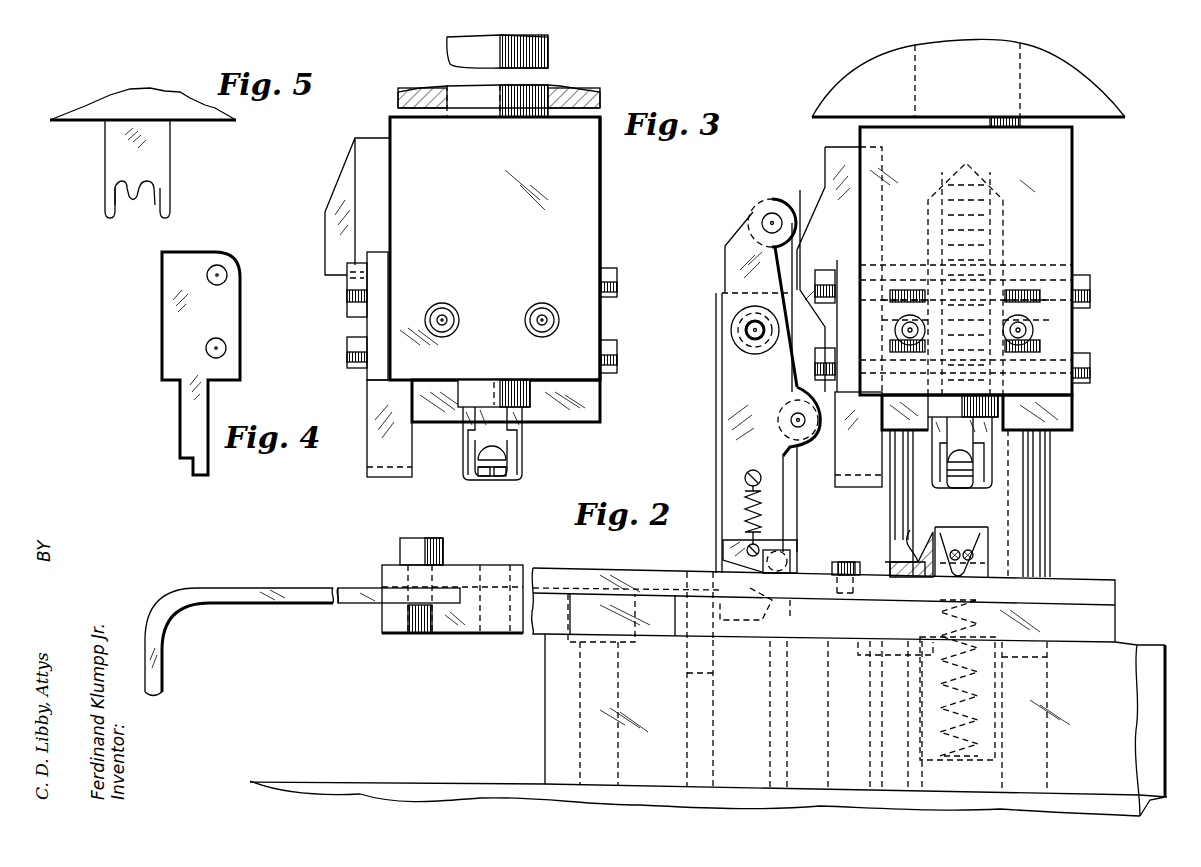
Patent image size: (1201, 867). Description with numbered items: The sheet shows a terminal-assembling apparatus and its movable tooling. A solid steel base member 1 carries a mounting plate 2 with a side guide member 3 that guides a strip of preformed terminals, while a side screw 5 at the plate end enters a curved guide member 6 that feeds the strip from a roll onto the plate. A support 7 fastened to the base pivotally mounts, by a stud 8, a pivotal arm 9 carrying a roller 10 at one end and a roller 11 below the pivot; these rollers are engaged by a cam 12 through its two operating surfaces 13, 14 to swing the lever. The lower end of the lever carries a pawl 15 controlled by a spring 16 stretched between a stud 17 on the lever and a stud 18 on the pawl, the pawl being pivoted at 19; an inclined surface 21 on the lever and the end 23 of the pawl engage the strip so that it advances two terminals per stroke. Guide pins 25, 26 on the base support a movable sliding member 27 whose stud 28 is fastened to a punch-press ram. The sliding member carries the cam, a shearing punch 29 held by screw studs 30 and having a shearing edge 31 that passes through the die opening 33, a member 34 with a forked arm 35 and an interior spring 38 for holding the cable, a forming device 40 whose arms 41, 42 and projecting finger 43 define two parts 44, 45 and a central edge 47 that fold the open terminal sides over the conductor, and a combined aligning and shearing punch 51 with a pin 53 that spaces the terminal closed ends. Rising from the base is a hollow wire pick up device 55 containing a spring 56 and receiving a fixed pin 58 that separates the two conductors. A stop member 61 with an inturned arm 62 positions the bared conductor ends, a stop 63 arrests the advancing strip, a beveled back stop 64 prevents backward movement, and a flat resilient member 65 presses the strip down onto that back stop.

In FIG. 2, the base member 1 is at (533, 694).
In FIG. 2, the mounting plate 2 is at (480, 633).
In FIG. 2, the side guide member 3 is at (475, 575).
In FIG. 2, the side screw 5 is at (445, 565).
In FIG. 2, the guide member 6 is at (310, 602).
In FIG. 2, the support 7 is at (716, 312).
In FIG. 2, the stud 8 is at (730, 336).
In FIG. 2, the pivotal arm 9 is at (724, 260).
In FIG. 2, the roller 10 is at (748, 198).
In FIG. 2, the roller 11 is at (812, 440).
In FIG. 3, the cam 12 is at (492, 248).
In FIG. 2, the cam 12 is at (823, 210).
In FIG. 3, the operating surface 13 is at (345, 190).
In FIG. 2, the operating surface 13 is at (824, 195).
In FIG. 3, the operating surface 14 is at (345, 288).
In FIG. 2, the operating surface 14 is at (815, 330).
In FIG. 2, the pawl 15 is at (723, 553).
In FIG. 2, the spring 16 is at (762, 510).
In FIG. 2, the stud 17 is at (745, 478).
In FIG. 2, the stud 18 is at (790, 538).
In FIG. 2, the pivot 19 is at (800, 557).
In FIG. 2, the inclined surface 21 is at (746, 620).
In FIG. 2, the end of pawl 23 is at (755, 605).
In FIG. 2, the guide pin 25 is at (910, 520).
In FIG. 3, the guide pin 26 is at (492, 465).
In FIG. 2, the guide pin 26 is at (968, 478).
In FIG. 5, the movable sliding member 27 is at (91, 135).
In FIG. 3, the movable sliding member 27 is at (593, 268).
In FIG. 2, the movable sliding member 27 is at (1073, 237).
In FIG. 3, the stud 28 is at (538, 117).
In FIG. 2, the stud 28 is at (962, 120).
In FIG. 4, the shearing punch 29 is at (239, 348).
In FIG. 3, the shearing punch 29 is at (376, 437).
In FIG. 2, the shearing punch 29 is at (862, 480).
In FIG. 3, the screw stud 30 is at (345, 340).
In FIG. 2, the screw stud 30 is at (815, 275).
In FIG. 4, the shearing edge 31 is at (205, 478).
In FIG. 3, the shearing edge 31 is at (400, 480).
In FIG. 2, the shearing edge 31 is at (850, 445).
In FIG. 2, the die opening 33 is at (441, 522).
In FIG. 3, the member 34 is at (498, 387).
In FIG. 2, the member 34 is at (1008, 418).
In FIG. 3, the forked arm 35 is at (478, 468).
In FIG. 2, the forked arm 35 is at (975, 466).
In FIG. 3, the spring 38 is at (608, 320).
In FIG. 2, the spring 38 is at (1060, 326).
In FIG. 5, the forming device 40 is at (99, 180).
In FIG. 3, the forming device 40 is at (532, 449).
In FIG. 2, the forming device 40 is at (1002, 454).
In FIG. 5, the arm 41 is at (110, 204).
In FIG. 3, the arm 41 is at (475, 452).
In FIG. 2, the arm 41 is at (960, 465).
In FIG. 5, the arm 42 is at (165, 203).
In FIG. 3, the arm 42 is at (510, 478).
In FIG. 5, the projecting finger 43 is at (127, 222).
In FIG. 5, the part 44 is at (142, 193).
In FIG. 5, the part 45 is at (150, 190).
In FIG. 5, the edge 47 is at (125, 183).
In FIG. 3, the combined aligning and shearing punch 51 is at (484, 472).
In FIG. 3, the pin 53 is at (500, 472).
In FIG. 2, the pin 53 is at (995, 460).
In FIG. 2, the wire pick up device 55 is at (998, 569).
In FIG. 2, the spring 56 is at (935, 695).
In FIG. 2, the fixed pin 58 is at (975, 540).
In FIG. 2, the stop member 61 is at (918, 545).
In FIG. 2, the inturned arm 62 is at (1008, 528).
In FIG. 2, the stop 63 is at (1030, 597).
In FIG. 2, the back stop 64 is at (915, 640).
In FIG. 2, the flat resilient member 65 is at (880, 585).